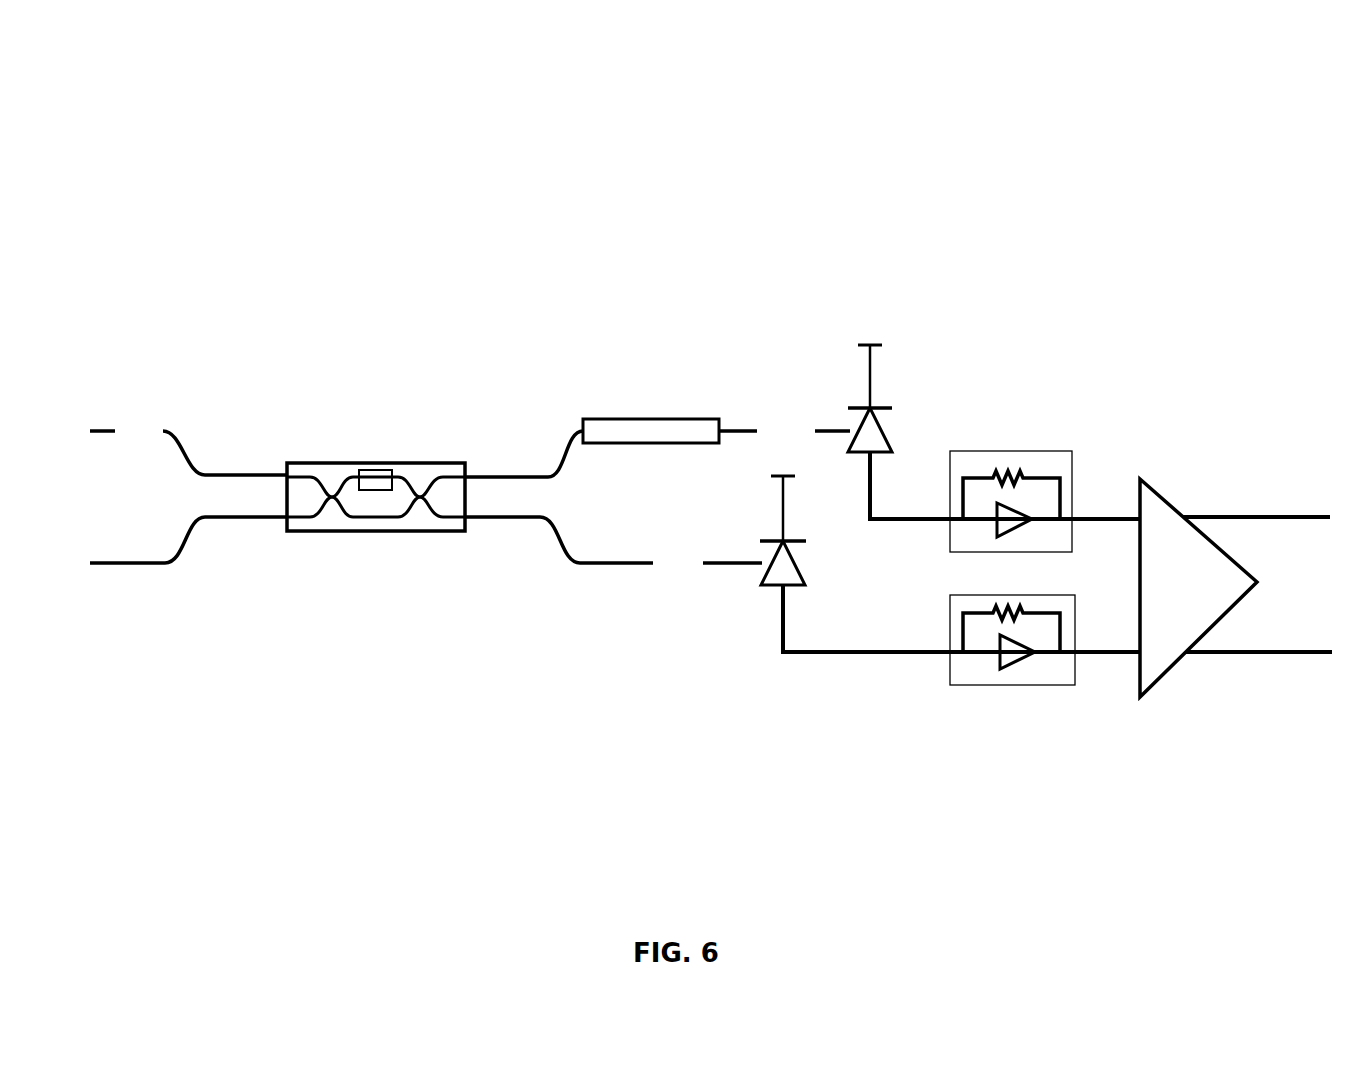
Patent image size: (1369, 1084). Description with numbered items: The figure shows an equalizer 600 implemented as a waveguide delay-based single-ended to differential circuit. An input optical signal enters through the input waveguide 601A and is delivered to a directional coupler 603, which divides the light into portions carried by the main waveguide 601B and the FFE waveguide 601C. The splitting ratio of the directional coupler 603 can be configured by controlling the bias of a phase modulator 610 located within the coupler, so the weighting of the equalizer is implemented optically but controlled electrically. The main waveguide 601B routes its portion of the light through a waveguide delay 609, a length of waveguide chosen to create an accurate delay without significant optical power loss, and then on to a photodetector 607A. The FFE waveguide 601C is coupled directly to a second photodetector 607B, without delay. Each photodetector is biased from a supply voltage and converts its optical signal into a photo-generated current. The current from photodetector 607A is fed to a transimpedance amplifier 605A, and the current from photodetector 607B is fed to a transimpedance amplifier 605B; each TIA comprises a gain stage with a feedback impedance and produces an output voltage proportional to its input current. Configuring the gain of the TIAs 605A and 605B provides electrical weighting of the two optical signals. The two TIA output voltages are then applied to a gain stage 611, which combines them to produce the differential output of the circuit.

The equalizer 600 is at (306, 124).
The input waveguide 601A is at (107, 433).
The main waveguide 601B is at (497, 470).
The FFE waveguide 601C is at (600, 565).
The directional coupler 603 is at (430, 462).
The transimpedance amplifier 605A is at (1033, 451).
The transimpedance amplifier 605B is at (973, 686).
The photodetector 607A is at (887, 443).
The photodetector 607B is at (765, 586).
The waveguide delay 609 is at (615, 419).
The phase modulator 610 is at (368, 469).
The gain stage 611 is at (1155, 485).